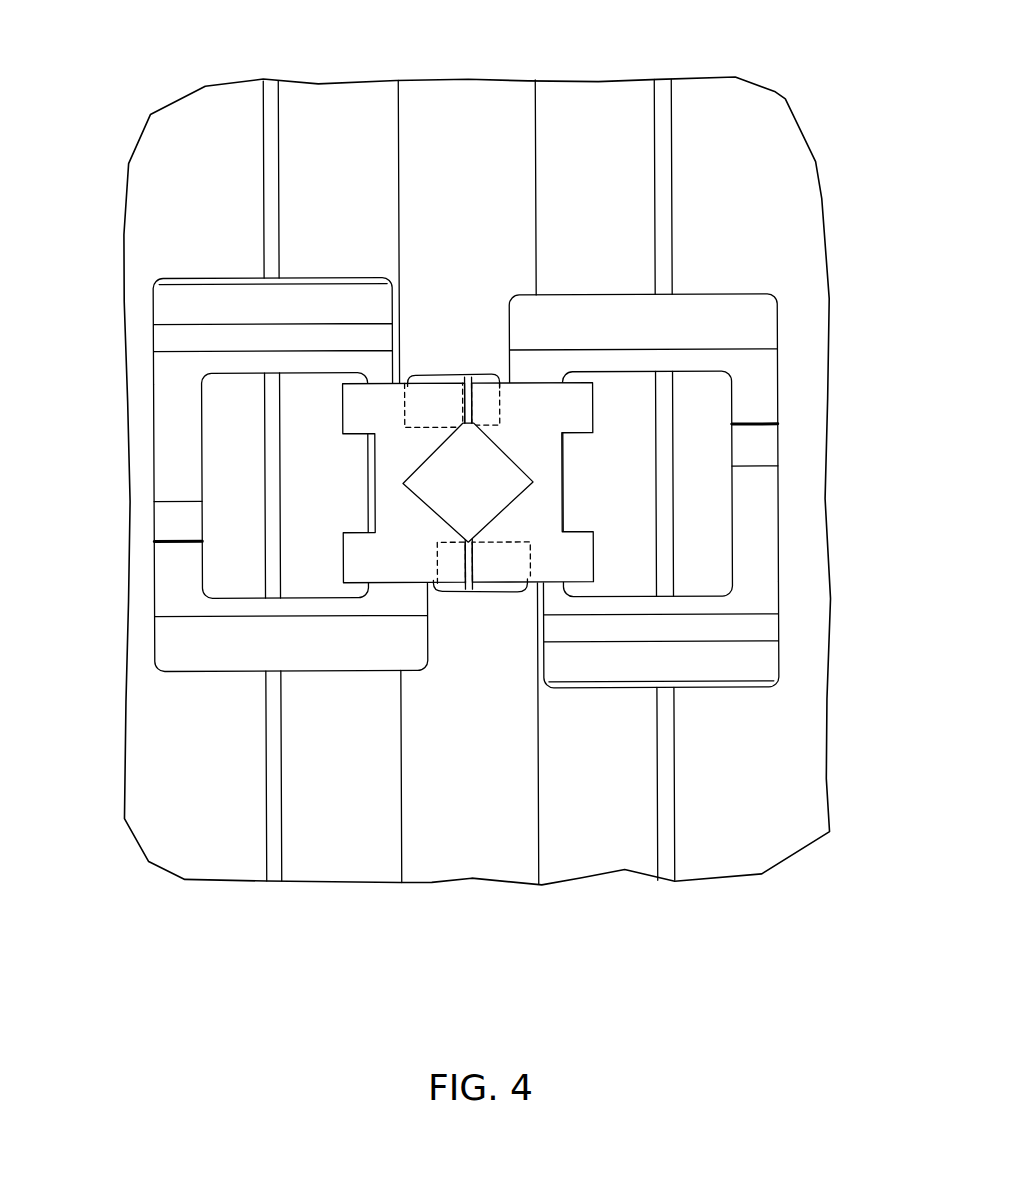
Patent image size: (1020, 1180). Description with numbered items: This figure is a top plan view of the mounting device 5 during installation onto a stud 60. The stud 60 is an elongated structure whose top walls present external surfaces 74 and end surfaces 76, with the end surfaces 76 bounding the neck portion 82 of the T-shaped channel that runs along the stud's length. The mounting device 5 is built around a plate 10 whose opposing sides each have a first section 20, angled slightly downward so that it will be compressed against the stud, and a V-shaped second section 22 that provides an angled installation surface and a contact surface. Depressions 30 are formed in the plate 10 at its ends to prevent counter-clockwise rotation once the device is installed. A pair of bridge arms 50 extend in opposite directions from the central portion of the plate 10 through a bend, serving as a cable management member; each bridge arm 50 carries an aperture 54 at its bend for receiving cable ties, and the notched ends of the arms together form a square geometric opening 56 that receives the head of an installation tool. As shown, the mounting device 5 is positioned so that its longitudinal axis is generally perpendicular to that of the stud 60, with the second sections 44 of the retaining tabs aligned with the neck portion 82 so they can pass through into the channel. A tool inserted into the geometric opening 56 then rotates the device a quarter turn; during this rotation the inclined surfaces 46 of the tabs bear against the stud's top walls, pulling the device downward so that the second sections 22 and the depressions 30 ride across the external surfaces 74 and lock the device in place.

The mounting device 5 is at (705, 212).
The plate 10 is at (180, 438).
The first section 20 is at (192, 650).
The second section 22 is at (177, 297).
The depression 30 is at (168, 522).
The second section of retaining tab 44 is at (433, 375).
The inclined surface 46 is at (480, 375).
The bridge arm 50 is at (400, 572).
The aperture 54 is at (355, 488).
The geometric opening 56 is at (478, 478).
The stud 60 is at (707, 783).
The external surface 74 is at (313, 845).
The end surface 76 is at (403, 825).
The neck portion 82 is at (459, 805).